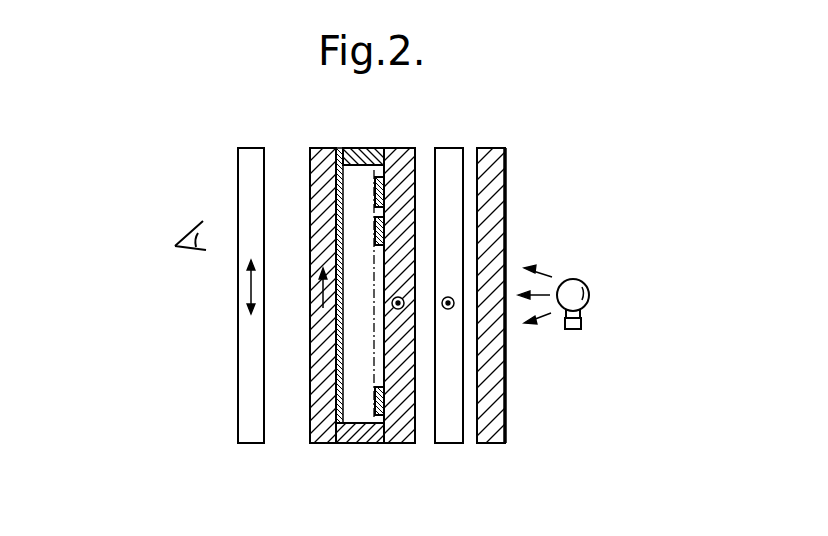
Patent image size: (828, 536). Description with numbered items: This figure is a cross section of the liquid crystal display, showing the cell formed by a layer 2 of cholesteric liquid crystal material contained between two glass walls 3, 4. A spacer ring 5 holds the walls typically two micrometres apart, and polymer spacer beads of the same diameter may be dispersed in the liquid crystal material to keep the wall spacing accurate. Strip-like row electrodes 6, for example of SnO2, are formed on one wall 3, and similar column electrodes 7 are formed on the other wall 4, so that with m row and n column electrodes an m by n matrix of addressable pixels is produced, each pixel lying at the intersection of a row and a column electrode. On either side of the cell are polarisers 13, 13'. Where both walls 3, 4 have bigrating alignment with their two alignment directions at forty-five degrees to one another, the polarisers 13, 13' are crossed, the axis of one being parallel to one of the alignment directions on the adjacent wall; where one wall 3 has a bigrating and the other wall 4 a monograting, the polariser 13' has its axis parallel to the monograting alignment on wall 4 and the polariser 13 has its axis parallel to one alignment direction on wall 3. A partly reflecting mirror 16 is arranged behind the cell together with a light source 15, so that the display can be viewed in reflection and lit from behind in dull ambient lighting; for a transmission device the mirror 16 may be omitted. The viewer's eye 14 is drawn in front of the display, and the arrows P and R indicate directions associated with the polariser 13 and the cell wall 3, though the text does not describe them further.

The layer of cholesteric liquid crystal material 2 is at (362, 408).
The glass wall 3 is at (323, 441).
The glass wall 4 is at (398, 438).
The spacer ring 5 is at (366, 150).
The row electrodes 6 is at (386, 178).
The column electrodes 7 is at (343, 150).
The polariser 13 is at (240, 270).
The polariser 13' is at (459, 268).
The observer eye 14 is at (193, 230).
The light source 15 is at (572, 284).
The partly reflecting mirror 16 is at (484, 440).
The polarization direction P is at (252, 291).
The direction R is at (323, 291).